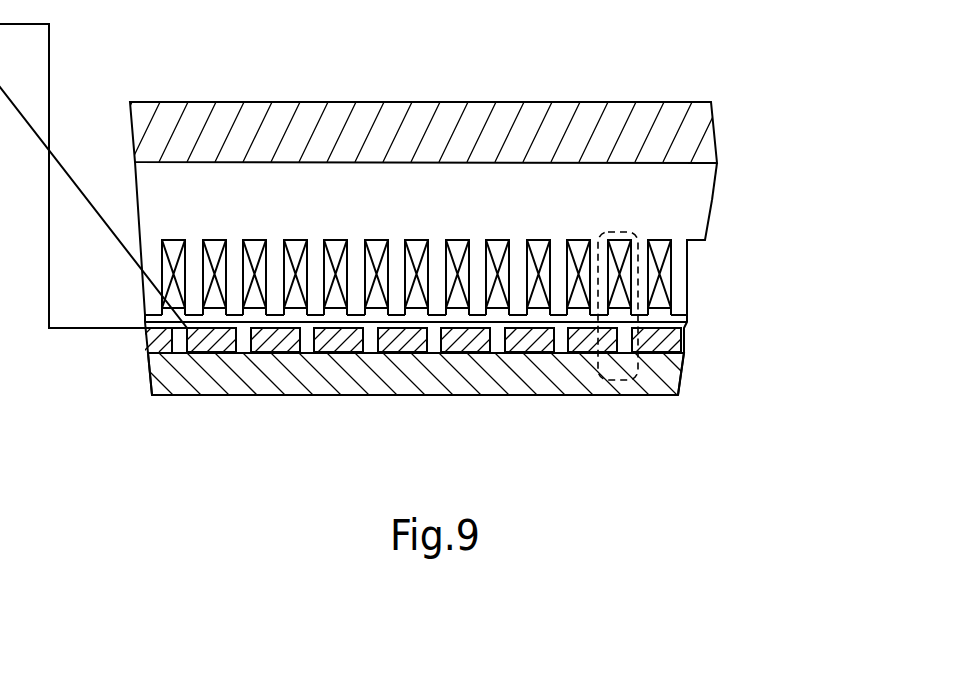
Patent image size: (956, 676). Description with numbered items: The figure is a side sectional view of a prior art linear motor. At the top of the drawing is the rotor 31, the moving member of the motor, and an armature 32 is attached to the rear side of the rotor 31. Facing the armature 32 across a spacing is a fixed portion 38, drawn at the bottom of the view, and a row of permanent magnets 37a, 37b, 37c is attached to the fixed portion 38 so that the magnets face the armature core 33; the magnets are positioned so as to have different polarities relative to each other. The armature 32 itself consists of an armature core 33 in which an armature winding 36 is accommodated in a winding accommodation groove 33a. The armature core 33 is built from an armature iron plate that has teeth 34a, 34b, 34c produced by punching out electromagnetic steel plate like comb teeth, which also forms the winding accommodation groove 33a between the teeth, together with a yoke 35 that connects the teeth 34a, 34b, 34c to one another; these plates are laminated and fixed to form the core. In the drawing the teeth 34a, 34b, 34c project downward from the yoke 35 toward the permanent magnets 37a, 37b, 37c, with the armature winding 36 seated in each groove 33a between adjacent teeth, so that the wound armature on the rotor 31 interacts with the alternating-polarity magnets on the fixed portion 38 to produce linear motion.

The rotor 31 is at (268, 120).
The armature 32 is at (697, 218).
The armature core 33 is at (416, 180).
The winding accommodation groove 33a is at (158, 286).
The tooth 34a is at (638, 310).
The tooth 34b is at (590, 313).
The tooth 34c is at (550, 318).
The yoke 35 is at (703, 182).
The armature winding 36 is at (660, 255).
The permanent magnet 37a is at (684, 340).
The permanent magnet 37b is at (560, 320).
The permanent magnet 37c is at (513, 340).
The fixed portion 38 is at (203, 380).